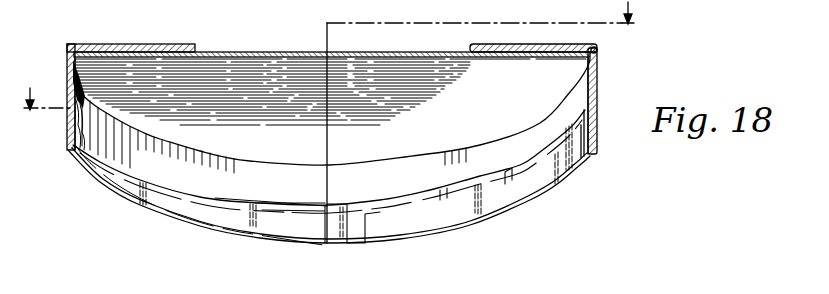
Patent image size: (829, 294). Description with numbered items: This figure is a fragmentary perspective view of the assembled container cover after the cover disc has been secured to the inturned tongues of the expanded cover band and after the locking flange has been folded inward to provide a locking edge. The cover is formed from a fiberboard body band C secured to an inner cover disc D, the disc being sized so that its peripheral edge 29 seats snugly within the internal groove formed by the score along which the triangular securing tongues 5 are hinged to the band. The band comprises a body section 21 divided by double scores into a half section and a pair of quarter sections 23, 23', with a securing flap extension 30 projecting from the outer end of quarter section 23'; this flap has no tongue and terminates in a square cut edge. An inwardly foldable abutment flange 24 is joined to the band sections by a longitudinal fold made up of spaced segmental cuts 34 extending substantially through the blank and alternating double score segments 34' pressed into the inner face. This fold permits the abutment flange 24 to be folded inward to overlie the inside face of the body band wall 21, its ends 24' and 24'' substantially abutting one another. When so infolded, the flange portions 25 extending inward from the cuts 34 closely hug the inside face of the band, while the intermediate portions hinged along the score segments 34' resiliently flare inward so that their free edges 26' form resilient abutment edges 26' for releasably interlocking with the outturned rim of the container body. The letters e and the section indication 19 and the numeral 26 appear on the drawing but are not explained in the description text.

The securing tongues 5 is at (140, 44).
The rim band e is at (178, 50).
The body band C is at (60, 72).
The body section 21 is at (600, 87).
The peripheral edge 29 is at (598, 50).
The inner cover disc D is at (287, 52).
The section line 19- 19 is at (335, 66).
The securing flap extension 30 is at (390, 170).
The flange portions 25 is at (158, 150).
The quarter section 23 is at (329, 159).
The quarter section 23' is at (271, 163).
The segmental cuts 34 is at (351, 209).
The score segments 34' is at (300, 205).
The rib 26 is at (259, 149).
The resilient abutment edges 26' is at (326, 124).
The abutment flange 24 is at (476, 212).
The flange end 24' is at (375, 237).
The flange end 24'' is at (309, 195).